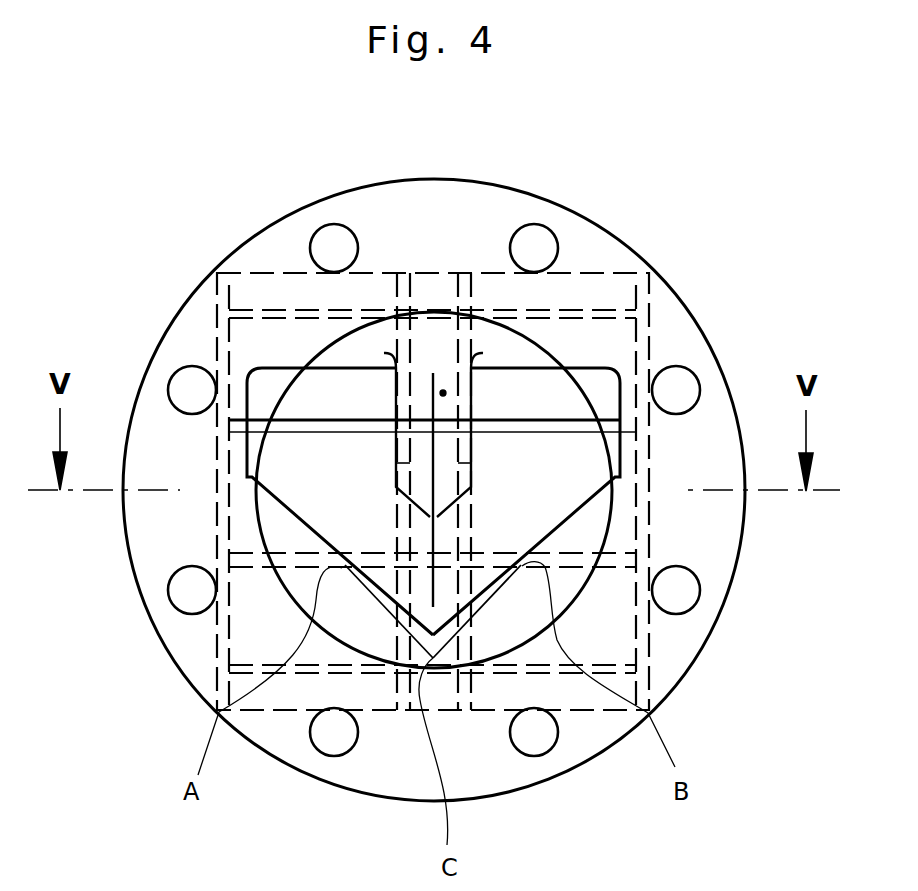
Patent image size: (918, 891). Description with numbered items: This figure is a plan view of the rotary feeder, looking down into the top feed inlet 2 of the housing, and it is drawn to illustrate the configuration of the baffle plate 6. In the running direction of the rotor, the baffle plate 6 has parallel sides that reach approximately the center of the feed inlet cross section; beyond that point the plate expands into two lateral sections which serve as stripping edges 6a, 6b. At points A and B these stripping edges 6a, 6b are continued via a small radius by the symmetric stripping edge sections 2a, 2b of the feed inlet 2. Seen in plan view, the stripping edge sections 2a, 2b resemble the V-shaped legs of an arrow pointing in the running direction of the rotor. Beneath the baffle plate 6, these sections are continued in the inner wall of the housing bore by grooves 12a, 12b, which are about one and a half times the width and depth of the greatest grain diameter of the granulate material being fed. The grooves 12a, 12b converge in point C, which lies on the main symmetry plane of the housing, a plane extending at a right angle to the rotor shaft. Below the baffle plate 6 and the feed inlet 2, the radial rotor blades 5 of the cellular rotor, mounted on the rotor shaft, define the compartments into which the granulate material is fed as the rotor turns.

The feed inlet 2 is at (570, 583).
The stripping edge section 2a is at (263, 483).
The stripping edge section 2b is at (600, 487).
The rotor blade 5 is at (560, 427).
The baffle plate 6 is at (443, 393).
The stripping edge 6a is at (375, 523).
The stripping edge 6b is at (493, 523).
The groove 12a is at (390, 583).
The groove 12b is at (478, 583).